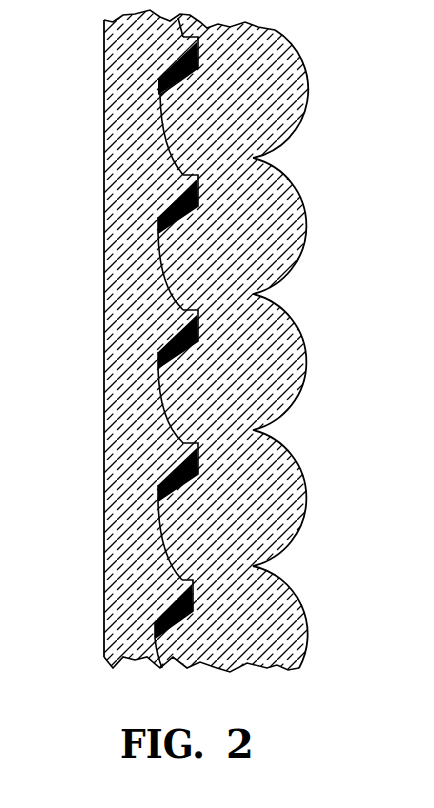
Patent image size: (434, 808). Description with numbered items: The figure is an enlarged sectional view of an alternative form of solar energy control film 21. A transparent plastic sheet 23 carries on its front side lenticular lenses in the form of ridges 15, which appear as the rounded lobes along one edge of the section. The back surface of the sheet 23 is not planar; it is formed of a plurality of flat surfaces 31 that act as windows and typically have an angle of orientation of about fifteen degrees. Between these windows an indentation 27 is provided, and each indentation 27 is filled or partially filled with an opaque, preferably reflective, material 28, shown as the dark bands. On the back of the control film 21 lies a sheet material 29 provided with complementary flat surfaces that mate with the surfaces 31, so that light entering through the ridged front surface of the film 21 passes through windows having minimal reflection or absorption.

The ridges 15 is at (280, 447).
The control film 21 is at (291, 179).
The transparent plastic sheet 23 is at (296, 53).
The indentation 27 is at (197, 445).
The opaque reflective material 28 is at (183, 490).
The sheet material 29 is at (117, 163).
The flat surfaces 31 is at (166, 265).